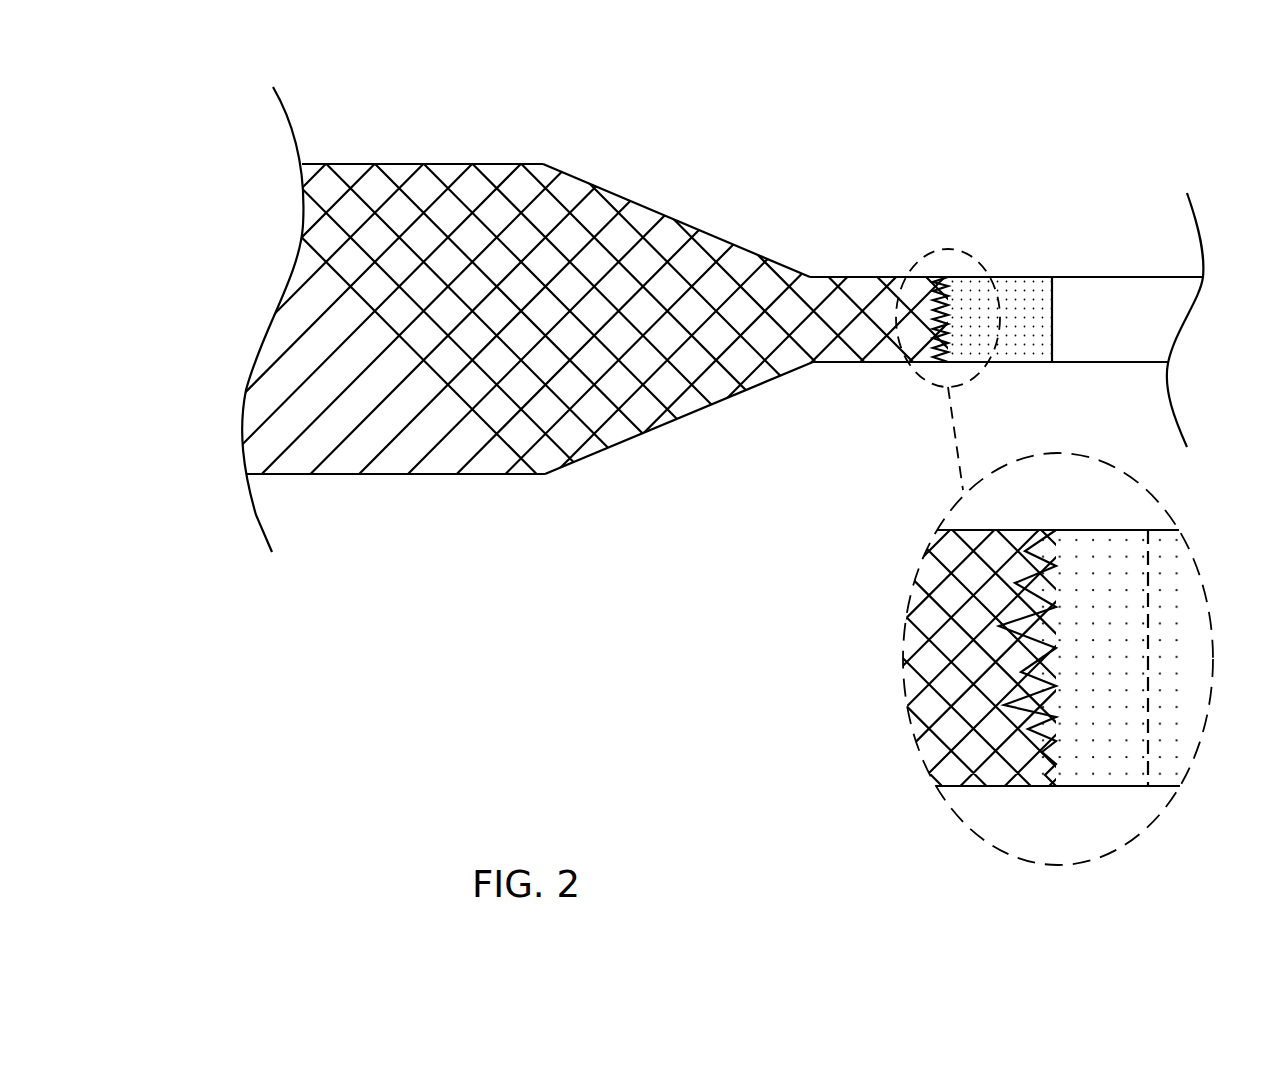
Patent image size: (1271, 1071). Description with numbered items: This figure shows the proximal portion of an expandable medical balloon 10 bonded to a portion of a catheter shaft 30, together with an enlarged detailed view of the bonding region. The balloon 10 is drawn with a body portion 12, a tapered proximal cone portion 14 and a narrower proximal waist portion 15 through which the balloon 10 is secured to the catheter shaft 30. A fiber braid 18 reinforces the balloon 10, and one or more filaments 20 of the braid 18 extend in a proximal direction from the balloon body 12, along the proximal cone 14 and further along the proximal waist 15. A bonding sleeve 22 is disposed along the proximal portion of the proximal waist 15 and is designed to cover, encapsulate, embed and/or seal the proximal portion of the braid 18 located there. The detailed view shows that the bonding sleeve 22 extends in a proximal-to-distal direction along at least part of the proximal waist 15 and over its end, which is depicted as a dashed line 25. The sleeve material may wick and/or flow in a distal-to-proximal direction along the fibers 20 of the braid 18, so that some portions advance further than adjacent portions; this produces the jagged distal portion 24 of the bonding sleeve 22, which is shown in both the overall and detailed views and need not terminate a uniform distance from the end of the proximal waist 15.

The expandable medical balloon 10 is at (644, 457).
The body portion 12 is at (420, 165).
The proximal cone portion 14 is at (672, 218).
The proximal waist portion 15 is at (862, 277).
The fiber braid 18 is at (352, 157).
The filaments 20 is at (767, 283).
The bonding sleeve 22 is at (1010, 280).
The distal portion of bonding sleeve 24 is at (943, 280).
The dashed line 25 is at (1156, 619).
The catheter shaft 30 is at (1102, 288).